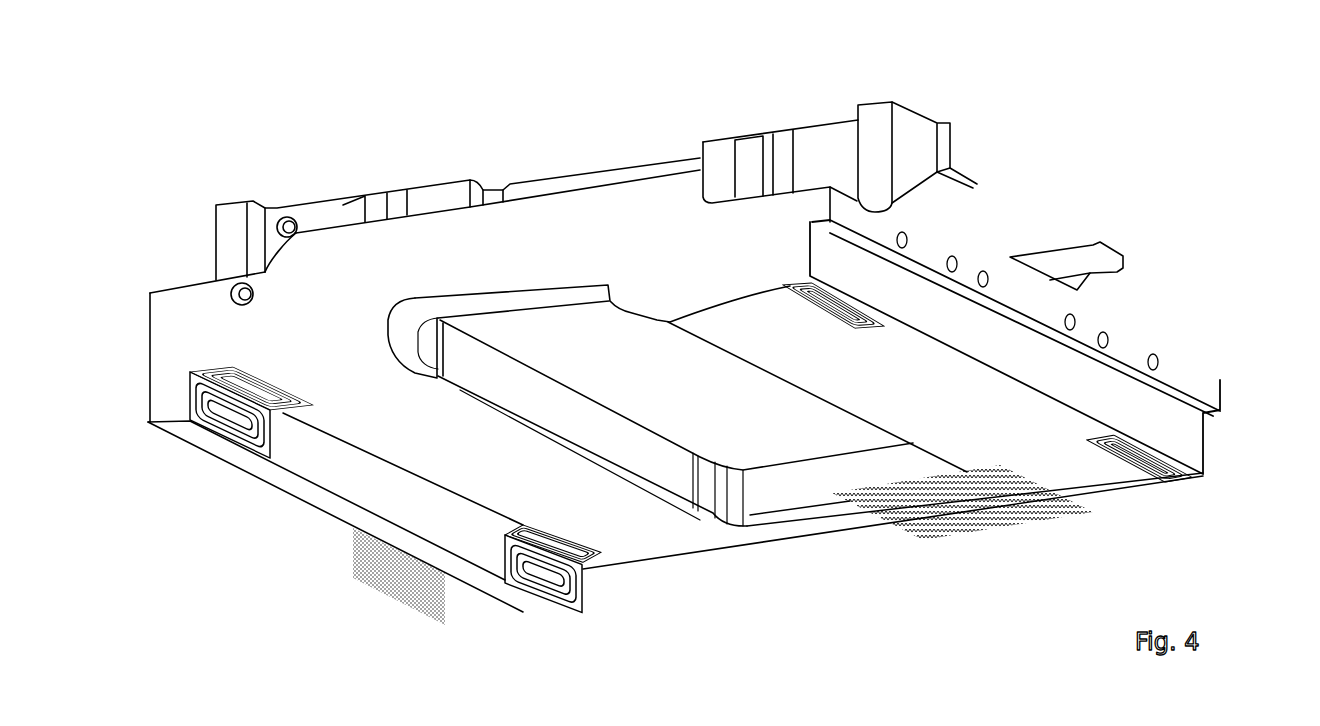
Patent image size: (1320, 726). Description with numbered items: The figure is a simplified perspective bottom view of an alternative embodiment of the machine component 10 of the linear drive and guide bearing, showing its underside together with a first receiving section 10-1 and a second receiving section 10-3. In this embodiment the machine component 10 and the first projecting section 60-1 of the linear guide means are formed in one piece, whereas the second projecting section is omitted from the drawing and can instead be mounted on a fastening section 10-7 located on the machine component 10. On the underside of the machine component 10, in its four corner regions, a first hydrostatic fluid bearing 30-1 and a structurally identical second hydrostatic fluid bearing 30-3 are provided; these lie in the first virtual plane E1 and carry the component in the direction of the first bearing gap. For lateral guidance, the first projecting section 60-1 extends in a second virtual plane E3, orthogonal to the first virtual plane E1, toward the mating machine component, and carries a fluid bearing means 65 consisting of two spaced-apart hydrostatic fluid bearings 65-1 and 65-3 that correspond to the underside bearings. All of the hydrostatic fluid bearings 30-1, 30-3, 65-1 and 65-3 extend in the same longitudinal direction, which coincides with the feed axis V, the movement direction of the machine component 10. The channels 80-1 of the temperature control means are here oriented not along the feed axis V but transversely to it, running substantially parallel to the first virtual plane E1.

The machine component 10 is at (573, 217).
The first receiving section 10-1 is at (660, 540).
The second receiving section 10-3 is at (1097, 473).
The fastening section 10-7 is at (1153, 413).
The first hydrostatic fluid bearing 30-1 is at (360, 497).
The second hydrostatic fluid bearing 30-3 is at (806, 285).
The first section 60-1 is at (337, 473).
The fluid bearing means 65 is at (214, 507).
The hydrostatic fluid bearing 65-1 is at (226, 440).
The hydrostatic fluid bearing 65-3 is at (538, 583).
The channels 80-1 is at (903, 234).
The first virtual plane E1 is at (990, 512).
The second virtual plane E3 is at (395, 580).
The feed axis V is at (710, 421).